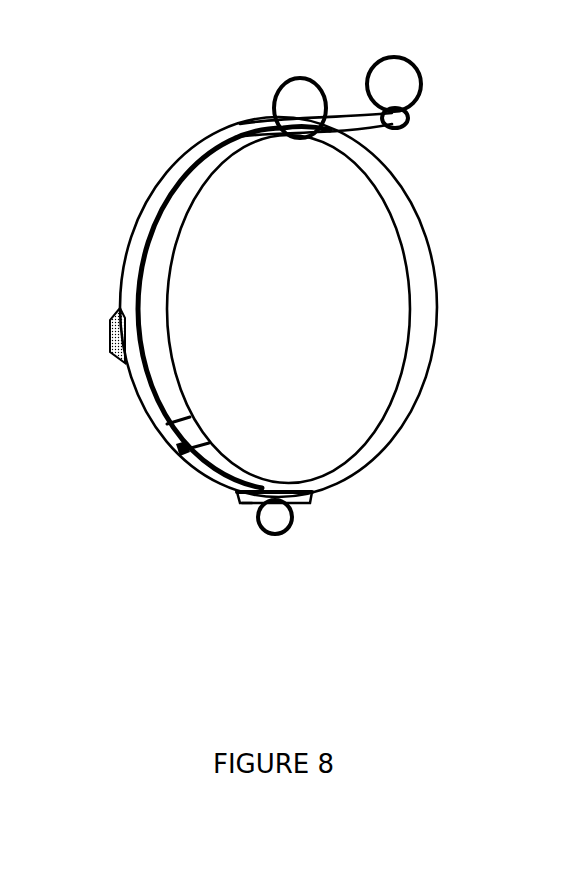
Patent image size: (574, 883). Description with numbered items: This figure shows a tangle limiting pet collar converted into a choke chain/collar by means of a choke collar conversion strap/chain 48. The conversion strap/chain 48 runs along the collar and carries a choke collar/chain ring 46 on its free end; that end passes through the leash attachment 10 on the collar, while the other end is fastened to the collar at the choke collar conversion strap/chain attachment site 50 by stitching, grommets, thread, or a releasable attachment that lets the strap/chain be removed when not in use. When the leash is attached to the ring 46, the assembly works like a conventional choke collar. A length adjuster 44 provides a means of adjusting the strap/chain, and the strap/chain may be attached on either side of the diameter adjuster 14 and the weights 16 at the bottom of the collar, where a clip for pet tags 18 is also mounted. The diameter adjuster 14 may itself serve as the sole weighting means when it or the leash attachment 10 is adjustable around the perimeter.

The leash attachment 10 is at (287, 83).
The diameter adjuster 14 is at (303, 502).
The weights 16 is at (245, 503).
The clip for pet tags 18 is at (288, 528).
The length adjuster 44 is at (112, 357).
The choke collar/chain ring 46 is at (420, 78).
The choke collar conversion strap/chain 48 is at (155, 192).
The choke collar conversion strap/chain attachment site 50 is at (163, 465).